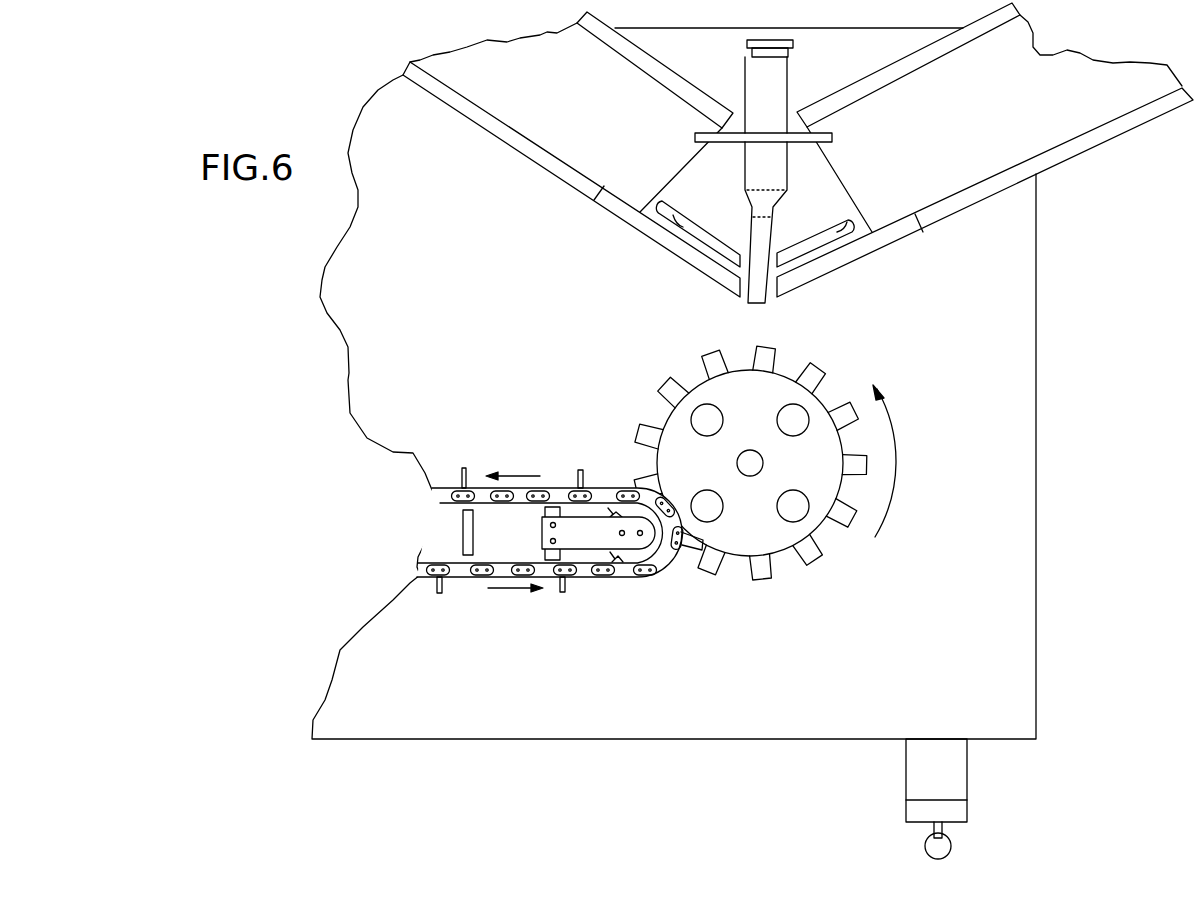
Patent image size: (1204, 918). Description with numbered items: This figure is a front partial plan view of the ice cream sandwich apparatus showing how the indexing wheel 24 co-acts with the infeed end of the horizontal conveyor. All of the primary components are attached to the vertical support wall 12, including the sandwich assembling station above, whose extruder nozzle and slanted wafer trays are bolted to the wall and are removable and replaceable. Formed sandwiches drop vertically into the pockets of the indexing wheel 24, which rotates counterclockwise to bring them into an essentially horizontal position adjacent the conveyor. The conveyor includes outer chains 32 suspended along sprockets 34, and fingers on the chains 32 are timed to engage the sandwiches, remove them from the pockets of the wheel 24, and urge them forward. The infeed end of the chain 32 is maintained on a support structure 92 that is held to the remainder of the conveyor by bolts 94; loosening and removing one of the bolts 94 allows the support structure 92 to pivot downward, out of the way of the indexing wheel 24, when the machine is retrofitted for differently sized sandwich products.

The vertical support wall 12 is at (987, 382).
The indexing wheel 24 is at (758, 523).
The outer chains 32 is at (608, 568).
The sprockets 34 is at (658, 550).
The support structure 92 is at (585, 540).
The bolts 94 is at (553, 541).